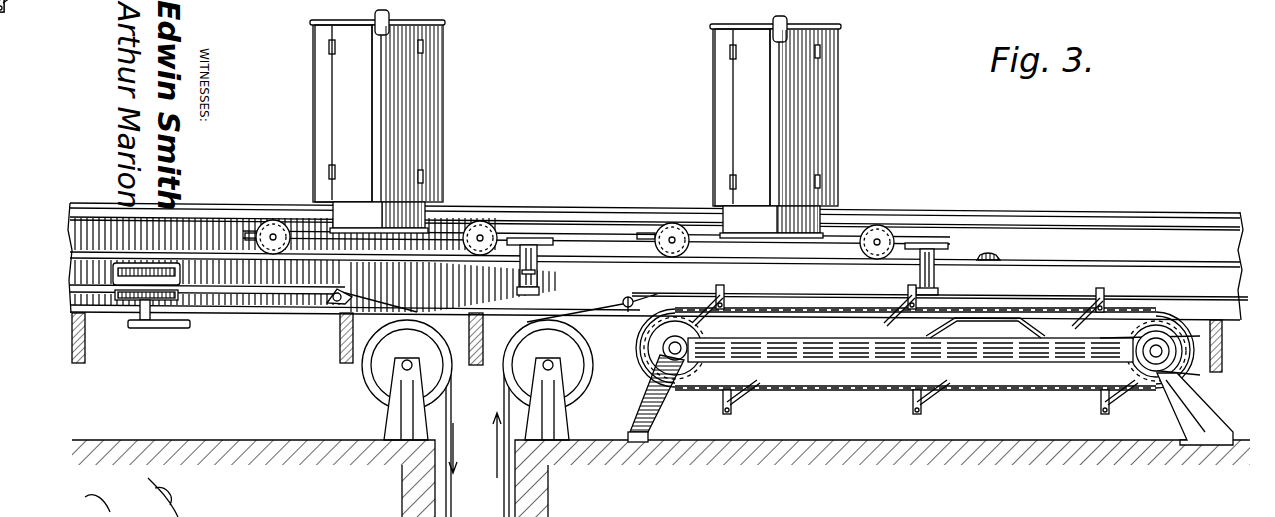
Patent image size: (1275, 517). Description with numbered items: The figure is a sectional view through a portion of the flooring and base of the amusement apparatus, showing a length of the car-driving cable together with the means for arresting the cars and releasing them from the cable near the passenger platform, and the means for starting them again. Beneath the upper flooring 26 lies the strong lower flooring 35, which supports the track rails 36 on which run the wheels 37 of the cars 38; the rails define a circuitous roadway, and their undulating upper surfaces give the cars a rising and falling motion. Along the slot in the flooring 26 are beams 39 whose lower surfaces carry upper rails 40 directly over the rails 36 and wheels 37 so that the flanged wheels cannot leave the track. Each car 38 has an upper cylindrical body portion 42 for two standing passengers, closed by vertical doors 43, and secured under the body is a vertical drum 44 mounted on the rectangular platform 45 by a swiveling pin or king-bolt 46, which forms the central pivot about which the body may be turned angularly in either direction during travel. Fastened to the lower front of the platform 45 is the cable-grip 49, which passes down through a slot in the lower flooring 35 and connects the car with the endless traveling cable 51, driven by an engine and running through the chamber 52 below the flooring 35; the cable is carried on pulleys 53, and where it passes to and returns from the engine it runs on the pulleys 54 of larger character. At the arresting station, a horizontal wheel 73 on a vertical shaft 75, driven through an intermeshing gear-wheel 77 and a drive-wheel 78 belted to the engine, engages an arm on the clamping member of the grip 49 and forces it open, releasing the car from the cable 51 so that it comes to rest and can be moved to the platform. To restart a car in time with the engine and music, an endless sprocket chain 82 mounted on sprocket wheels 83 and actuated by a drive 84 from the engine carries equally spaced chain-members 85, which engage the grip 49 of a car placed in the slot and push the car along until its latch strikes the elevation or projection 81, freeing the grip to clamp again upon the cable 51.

The flooring 26 is at (654, 279).
The lower flooring 35 is at (1210, 263).
The track rails 36 is at (1120, 262).
The wheels 37 is at (485, 232).
The cars 38 is at (593, 108).
The beams 39 is at (227, 214).
The upper rails 40 is at (583, 231).
The upper cylindrical body portion 42 is at (445, 22).
The vertical doors 43 is at (373, 148).
The vertical drum 44 is at (745, 216).
The rectangular platform 45 is at (256, 228).
The swiveling pin or king-bolt 46 is at (385, 245).
The cable-grip 49 is at (540, 284).
The endless traveling cable 51 is at (998, 296).
The chamber 52 is at (253, 442).
The pulleys 53 is at (627, 298).
The pulleys of larger character 54 is at (367, 386).
The horizontal wheel 73 is at (143, 262).
The vertical shaft 75 is at (143, 270).
The gear-wheel 77 is at (145, 291).
The drive-wheel 78 is at (150, 333).
The elevation or projection 81 is at (1000, 254).
The endless sprocket chain 82 is at (1040, 393).
The sprocket wheels 83 is at (715, 340).
The drive 84 is at (1197, 377).
The chain-members 85 is at (725, 295).